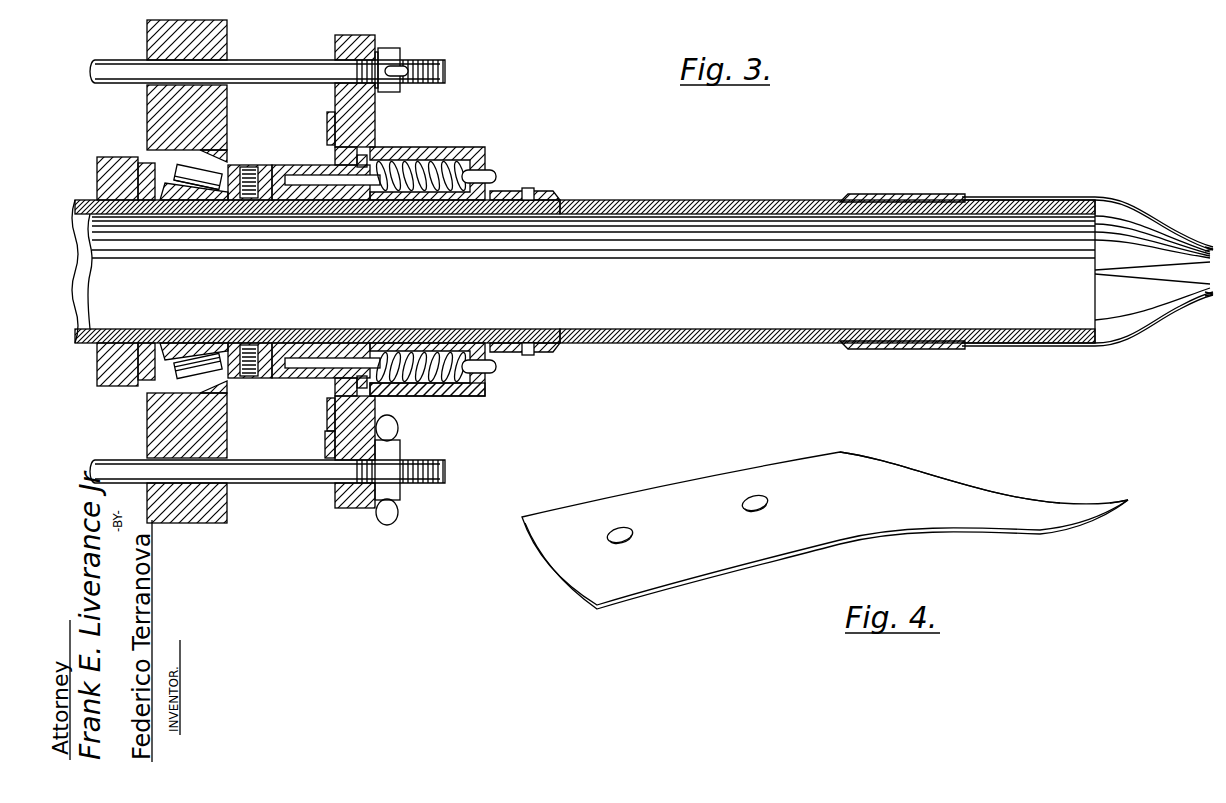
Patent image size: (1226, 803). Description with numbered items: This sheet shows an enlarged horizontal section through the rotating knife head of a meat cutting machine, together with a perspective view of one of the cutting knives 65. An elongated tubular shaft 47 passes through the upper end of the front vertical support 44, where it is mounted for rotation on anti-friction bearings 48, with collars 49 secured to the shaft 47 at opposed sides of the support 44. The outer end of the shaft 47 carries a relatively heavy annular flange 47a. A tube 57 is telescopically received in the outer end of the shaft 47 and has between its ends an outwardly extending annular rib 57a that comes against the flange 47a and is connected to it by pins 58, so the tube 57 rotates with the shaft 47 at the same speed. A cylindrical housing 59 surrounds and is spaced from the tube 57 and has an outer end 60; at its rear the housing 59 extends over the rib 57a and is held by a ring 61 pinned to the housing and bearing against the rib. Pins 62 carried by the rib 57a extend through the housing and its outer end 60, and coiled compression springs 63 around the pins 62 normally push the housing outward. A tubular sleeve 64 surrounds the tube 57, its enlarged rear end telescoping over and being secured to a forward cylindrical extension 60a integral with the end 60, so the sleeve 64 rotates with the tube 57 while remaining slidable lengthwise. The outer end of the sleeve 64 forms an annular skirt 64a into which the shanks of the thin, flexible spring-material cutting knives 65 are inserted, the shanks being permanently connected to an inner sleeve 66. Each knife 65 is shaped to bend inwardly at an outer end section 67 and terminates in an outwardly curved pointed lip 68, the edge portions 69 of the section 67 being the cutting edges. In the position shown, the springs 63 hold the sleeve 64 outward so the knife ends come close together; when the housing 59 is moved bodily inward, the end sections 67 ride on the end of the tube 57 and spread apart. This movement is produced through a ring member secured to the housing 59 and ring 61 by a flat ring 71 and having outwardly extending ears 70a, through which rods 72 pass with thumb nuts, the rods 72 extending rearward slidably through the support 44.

In FIG. 3, the vertical support 44 is at (153, 108).
In FIG. 3, the tubular shaft 47 is at (100, 200).
In FIG. 3, the annular flange 47a is at (287, 380).
In FIG. 3, the anti-friction bearings 48 is at (180, 165).
In FIG. 3, the collars 49 is at (105, 353).
In FIG. 3, the tube 57 is at (615, 322).
In FIG. 3, the annular rib 57a is at (345, 345).
In FIG. 3, the pins 58 is at (325, 202).
In FIG. 3, the cylindrical housing 59 is at (420, 393).
In FIG. 3, the outer end 60 is at (488, 378).
In FIG. 3, the forward cylindrical extension 60a is at (520, 193).
In FIG. 3, the ring 61 is at (325, 398).
In FIG. 3, the pins 62 is at (497, 172).
In FIG. 3, the coiled compression springs 63 is at (445, 165).
In FIG. 3, the tubular sleeve 64 is at (700, 201).
In FIG. 3, the annular skirt 64a is at (870, 350).
In FIG. 3, the cutting knives 65 is at (1100, 288).
In FIG. 4, the cutting knives 65 is at (755, 545).
In FIG. 3, the sleeve 66 is at (897, 330).
In FIG. 4, the outer end section 67 is at (1000, 492).
In FIG. 3, the pointed lip 68 is at (1203, 247).
In FIG. 4, the pointed lip 68 is at (1110, 507).
In FIG. 4, the cutting edges 69 is at (1075, 540).
In FIG. 3, the ears 70a is at (348, 500).
In FIG. 3, the flat ring 71 is at (327, 437).
In FIG. 3, the rods 72 is at (245, 68).